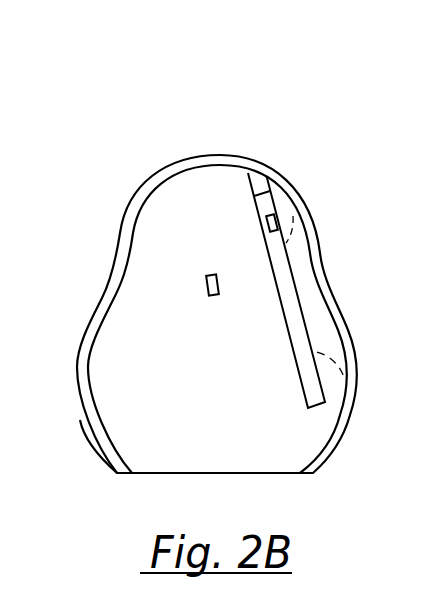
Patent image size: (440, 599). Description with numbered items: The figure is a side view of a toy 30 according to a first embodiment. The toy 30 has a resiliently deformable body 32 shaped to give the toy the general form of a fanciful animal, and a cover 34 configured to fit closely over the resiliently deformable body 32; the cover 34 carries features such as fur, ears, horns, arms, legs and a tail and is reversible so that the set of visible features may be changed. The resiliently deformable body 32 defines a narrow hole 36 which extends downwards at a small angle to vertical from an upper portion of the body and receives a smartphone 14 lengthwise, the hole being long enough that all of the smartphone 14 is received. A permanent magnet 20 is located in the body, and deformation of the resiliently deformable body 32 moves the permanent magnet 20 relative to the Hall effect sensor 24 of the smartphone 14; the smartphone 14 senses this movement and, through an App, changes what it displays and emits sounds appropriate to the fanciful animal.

The toy 30 is at (224, 250).
The cover 34 is at (139, 203).
The resiliently deformable body 32 is at (127, 416).
The smartphone 14 is at (284, 276).
The narrow hole 36 is at (263, 184).
The Hall effect sensor 24 is at (277, 215).
The permanent magnet 20 is at (206, 293).